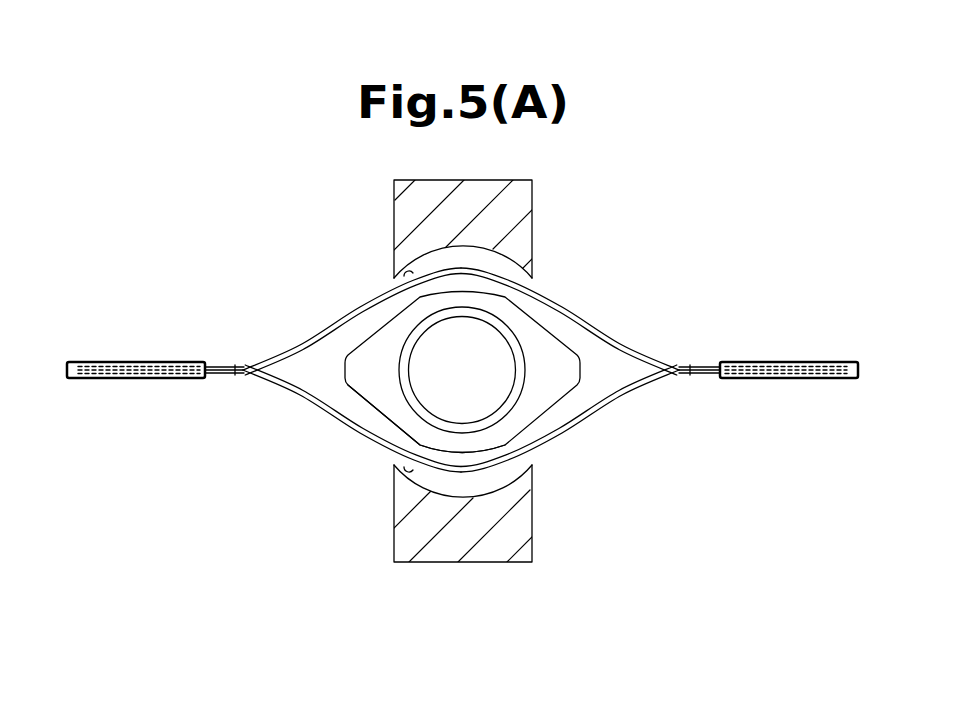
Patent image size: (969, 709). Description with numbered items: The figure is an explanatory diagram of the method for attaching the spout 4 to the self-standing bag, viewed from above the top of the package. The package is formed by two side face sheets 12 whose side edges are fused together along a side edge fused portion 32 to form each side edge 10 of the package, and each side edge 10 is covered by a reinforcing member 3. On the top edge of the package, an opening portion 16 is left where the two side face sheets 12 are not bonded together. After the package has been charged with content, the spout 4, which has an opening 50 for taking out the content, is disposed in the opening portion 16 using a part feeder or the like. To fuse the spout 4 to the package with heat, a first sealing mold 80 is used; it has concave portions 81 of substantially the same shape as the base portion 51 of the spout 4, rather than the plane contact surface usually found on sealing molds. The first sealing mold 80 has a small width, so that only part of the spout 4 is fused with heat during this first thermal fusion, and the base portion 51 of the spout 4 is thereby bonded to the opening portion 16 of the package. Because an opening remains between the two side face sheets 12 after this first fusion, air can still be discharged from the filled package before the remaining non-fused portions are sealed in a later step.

The reinforcing member 3 is at (92, 361).
The spout 4 is at (550, 356).
The side edge 10 is at (72, 380).
The side face sheet 12 is at (622, 342).
The opening portion 16 is at (313, 338).
The side edge fused portion 32 is at (220, 377).
The opening 50 is at (410, 366).
The base portion 51 is at (390, 420).
The first sealing mold 80 is at (555, 178).
The concave portion 81 is at (394, 277).